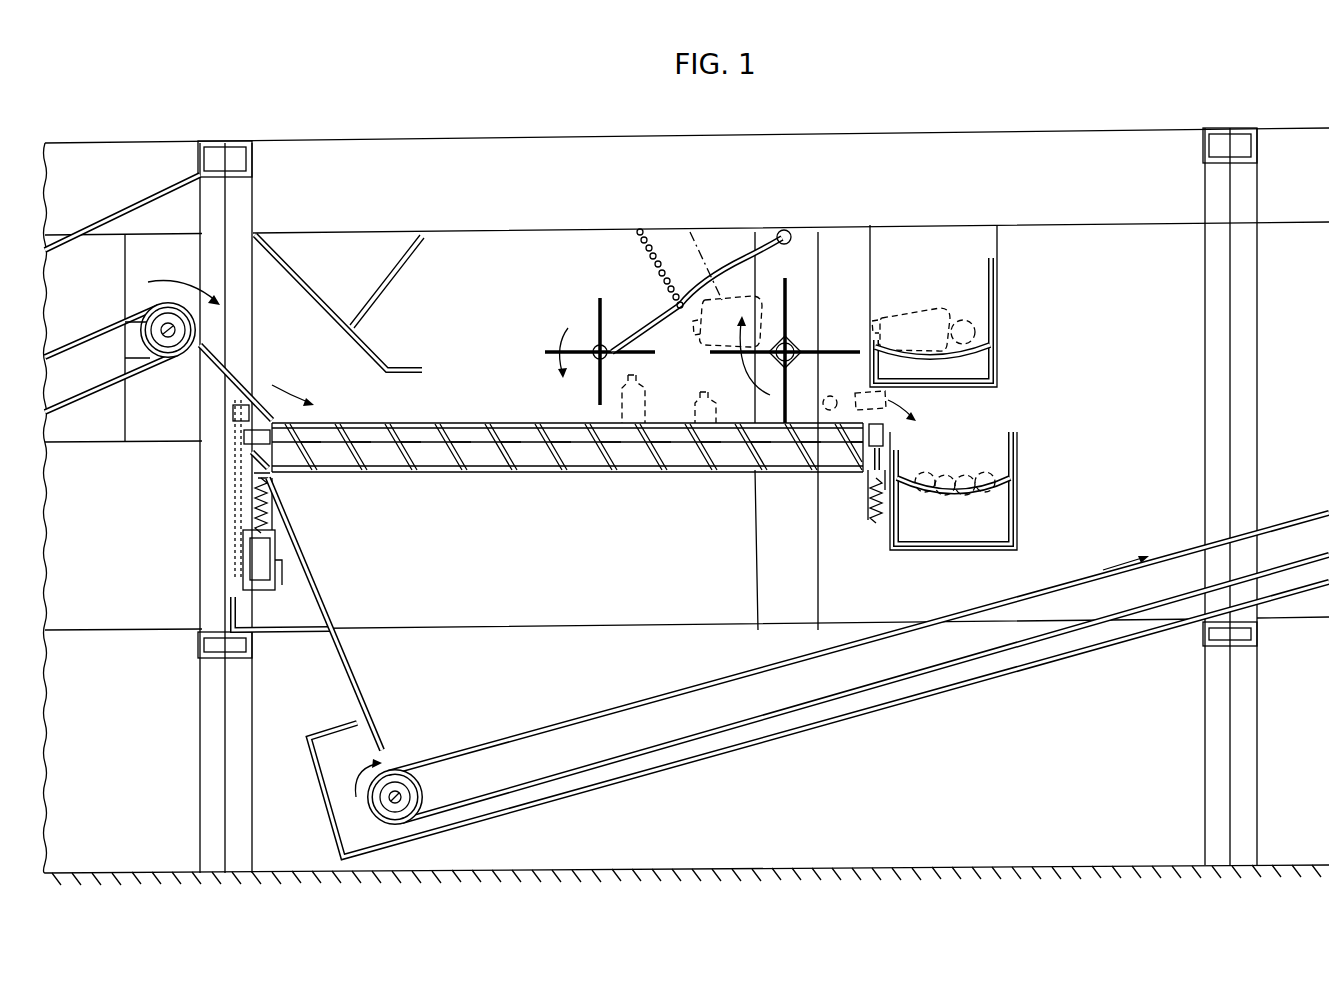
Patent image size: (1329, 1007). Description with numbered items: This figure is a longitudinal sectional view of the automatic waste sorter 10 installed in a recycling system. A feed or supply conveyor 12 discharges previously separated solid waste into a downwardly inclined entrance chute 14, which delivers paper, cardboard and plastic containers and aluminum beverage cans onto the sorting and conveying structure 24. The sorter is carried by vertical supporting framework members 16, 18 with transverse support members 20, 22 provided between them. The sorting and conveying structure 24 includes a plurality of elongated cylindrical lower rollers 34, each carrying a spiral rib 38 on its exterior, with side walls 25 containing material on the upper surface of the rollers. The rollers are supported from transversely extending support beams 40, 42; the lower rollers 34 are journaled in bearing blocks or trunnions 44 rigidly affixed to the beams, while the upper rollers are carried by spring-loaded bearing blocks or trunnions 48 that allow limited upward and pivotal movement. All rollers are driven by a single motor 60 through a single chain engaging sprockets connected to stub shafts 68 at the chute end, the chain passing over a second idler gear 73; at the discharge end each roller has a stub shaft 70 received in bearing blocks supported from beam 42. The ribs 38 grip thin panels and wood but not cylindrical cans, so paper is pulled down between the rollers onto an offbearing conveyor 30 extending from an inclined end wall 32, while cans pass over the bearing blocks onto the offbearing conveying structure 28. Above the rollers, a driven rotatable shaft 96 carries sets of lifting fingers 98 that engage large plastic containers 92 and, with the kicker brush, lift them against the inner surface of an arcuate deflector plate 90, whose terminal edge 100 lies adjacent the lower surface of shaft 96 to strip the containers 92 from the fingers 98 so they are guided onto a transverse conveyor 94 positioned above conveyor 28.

The automatic sorter 10 is at (435, 138).
The feed or supply conveyor 12 is at (88, 405).
The entrance chute 14 is at (300, 305).
The vertical supporting framework member 16 is at (276, 713).
The vertical supporting framework member 18 is at (1218, 752).
The transverse support member 20 is at (203, 652).
The transverse support member 22 is at (1205, 641).
The sorting and conveying structure 24 is at (567, 461).
The side walls 25 is at (586, 277).
The offbearing conveying structure 28 is at (983, 490).
The offbearing conveyor 30 is at (632, 706).
The inclined end wall 32 is at (340, 662).
The lower rollers 34 is at (637, 475).
The spiral rib 38 is at (487, 423).
The support frame or beam 40 is at (265, 500).
The support frame or beam 42 is at (868, 503).
The bearing blocks or trunnions 44 is at (880, 460).
The bearing blocks or trunnions 48 is at (253, 436).
The motor 60 is at (255, 545).
The stub shafts 68 is at (253, 459).
The stub shaft 70 is at (888, 450).
The second idler gear 73 is at (232, 413).
The arcuate deflector plate 90 is at (742, 240).
The large plastic containers 92 is at (695, 240).
The transverse conveyor 94 is at (955, 350).
The driven rotatable shaft 96 is at (590, 344).
The lifting fingers 98 is at (640, 352).
The terminal edge 100 is at (627, 337).